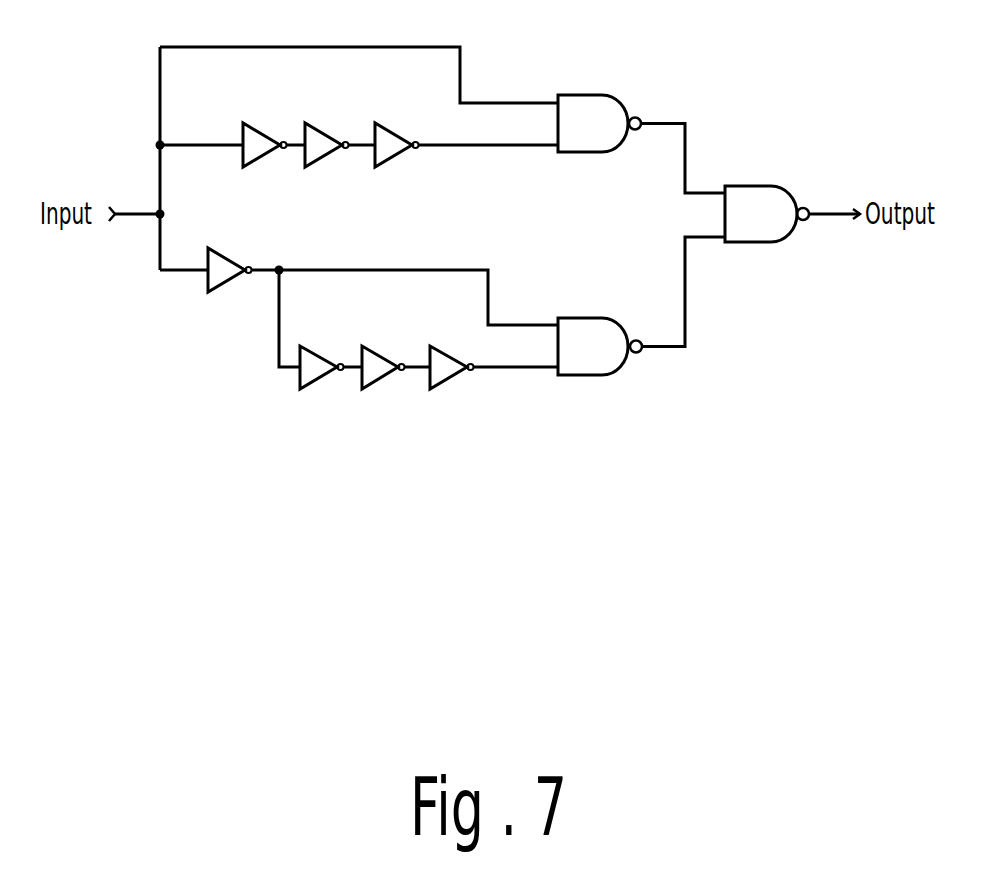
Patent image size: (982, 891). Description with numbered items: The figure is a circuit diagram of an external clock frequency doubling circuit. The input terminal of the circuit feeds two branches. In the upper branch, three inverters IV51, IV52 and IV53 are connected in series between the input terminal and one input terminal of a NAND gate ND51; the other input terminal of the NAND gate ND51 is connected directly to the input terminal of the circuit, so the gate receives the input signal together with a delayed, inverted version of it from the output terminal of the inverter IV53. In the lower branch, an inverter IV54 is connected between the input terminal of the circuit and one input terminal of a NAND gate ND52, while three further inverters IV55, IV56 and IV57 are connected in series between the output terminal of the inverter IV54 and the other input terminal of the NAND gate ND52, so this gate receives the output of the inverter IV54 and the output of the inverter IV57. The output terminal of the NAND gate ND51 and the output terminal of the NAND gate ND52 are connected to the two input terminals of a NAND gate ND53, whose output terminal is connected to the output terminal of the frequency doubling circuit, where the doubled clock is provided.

The inverter IV51 is at (265, 165).
The inverter IV52 is at (327, 165).
The inverter IV53 is at (397, 165).
The inverter IV54 is at (230, 292).
The inverter IV55 is at (322, 388).
The inverter IV56 is at (384, 388).
The inverter IV57 is at (454, 388).
The NAND gate ND51 is at (599, 149).
The NAND gate ND52 is at (600, 373).
The NAND gate ND53 is at (767, 238).